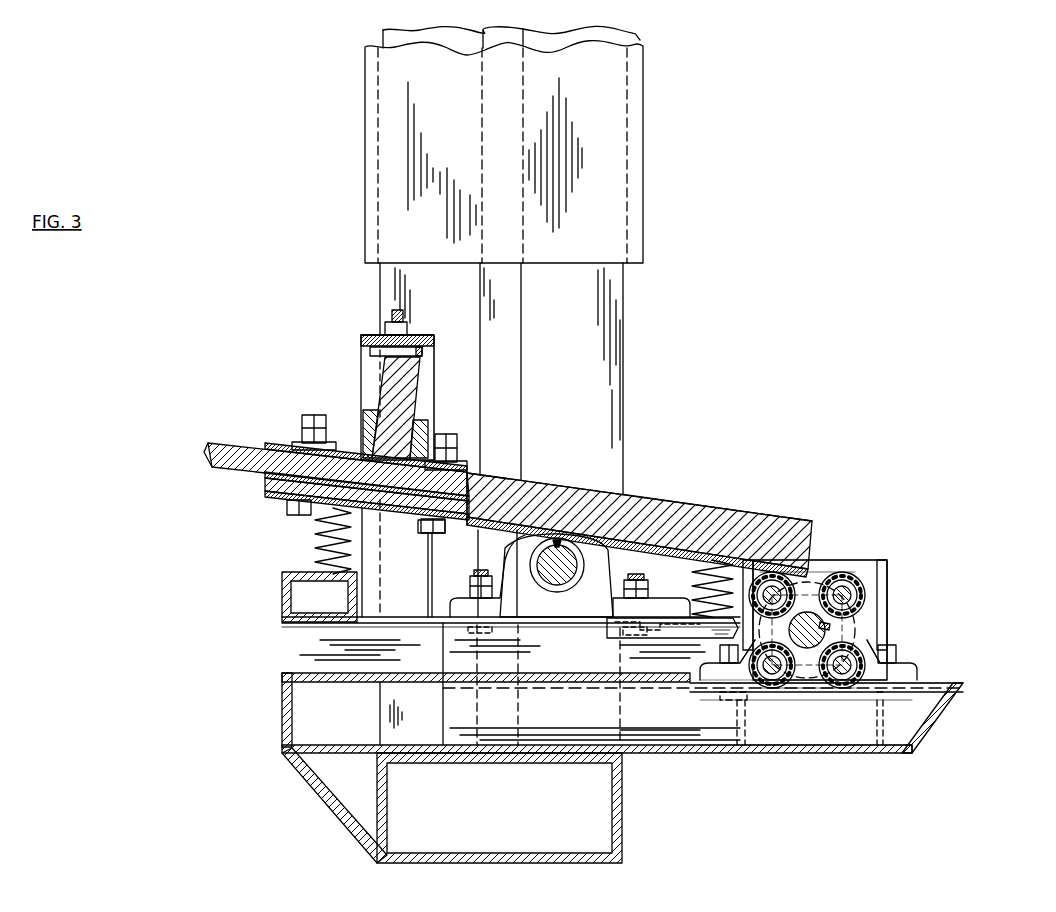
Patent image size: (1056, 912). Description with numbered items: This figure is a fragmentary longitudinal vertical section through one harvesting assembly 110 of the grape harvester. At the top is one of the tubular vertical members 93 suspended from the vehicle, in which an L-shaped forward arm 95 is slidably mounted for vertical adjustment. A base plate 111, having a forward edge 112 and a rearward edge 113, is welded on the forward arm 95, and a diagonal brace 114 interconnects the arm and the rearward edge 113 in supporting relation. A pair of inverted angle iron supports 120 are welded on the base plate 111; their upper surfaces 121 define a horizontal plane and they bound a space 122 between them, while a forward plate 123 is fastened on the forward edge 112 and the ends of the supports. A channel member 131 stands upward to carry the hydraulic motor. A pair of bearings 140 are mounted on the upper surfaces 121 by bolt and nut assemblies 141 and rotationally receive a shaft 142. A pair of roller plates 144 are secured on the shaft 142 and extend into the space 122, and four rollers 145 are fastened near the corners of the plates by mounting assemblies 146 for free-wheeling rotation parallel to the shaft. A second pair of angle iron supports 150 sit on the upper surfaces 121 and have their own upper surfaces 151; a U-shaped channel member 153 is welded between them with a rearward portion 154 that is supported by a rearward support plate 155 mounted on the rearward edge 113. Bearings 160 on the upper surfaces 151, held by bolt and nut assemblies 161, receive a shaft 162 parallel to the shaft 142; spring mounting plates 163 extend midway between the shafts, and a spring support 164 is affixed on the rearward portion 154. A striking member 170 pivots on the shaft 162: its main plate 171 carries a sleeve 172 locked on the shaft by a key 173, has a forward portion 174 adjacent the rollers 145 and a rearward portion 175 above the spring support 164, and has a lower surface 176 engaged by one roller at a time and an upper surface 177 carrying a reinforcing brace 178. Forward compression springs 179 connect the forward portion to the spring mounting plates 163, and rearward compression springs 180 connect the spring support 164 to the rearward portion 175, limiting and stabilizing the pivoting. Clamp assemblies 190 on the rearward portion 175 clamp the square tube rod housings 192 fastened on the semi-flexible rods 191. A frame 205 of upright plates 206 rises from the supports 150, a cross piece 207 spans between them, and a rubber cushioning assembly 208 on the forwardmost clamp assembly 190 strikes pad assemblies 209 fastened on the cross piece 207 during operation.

The vertical member 93 is at (645, 125).
The forward arm 95 is at (612, 324).
The harvesting assembly 110 is at (745, 405).
The base plate 111 is at (688, 755).
The forward edge 112 is at (912, 753).
The rearward edge 113 is at (282, 746).
The diagonal brace 114 is at (310, 787).
The angle iron support 120 is at (950, 684).
The upper surface 121 is at (930, 683).
The space 122 is at (806, 720).
The forward plate 123 is at (948, 714).
The channel member 131 is at (866, 578).
The bearing 140 is at (878, 630).
The bolt and nut assembly 141 is at (715, 655).
The shaft 142 is at (803, 680).
The roller plate 144 is at (800, 588).
The roller 145 is at (858, 574).
The mounting assembly 146 is at (762, 580).
The angle iron support 150 is at (415, 617).
The upper surface 151 is at (398, 618).
The channel member 153 is at (558, 672).
The rearward portion 154 is at (298, 672).
The rearward support plate 155 is at (282, 700).
The bearing 160 is at (614, 500).
The bolt and nut assembly 161 is at (480, 572).
The shaft 162 is at (543, 582).
The spring mounting plate 163 is at (650, 639).
The spring support 164 is at (284, 586).
The striking member 170 is at (712, 494).
The main plate 171 is at (642, 497).
The sleeve 172 is at (592, 572).
The key 173 is at (520, 530).
The forward portion 174 is at (800, 562).
The rearward portion 175 is at (273, 490).
The lower surface 176 is at (390, 513).
The upper surface 177 is at (510, 512).
The brace 178 is at (728, 512).
The forward compression spring 179 is at (698, 578).
The rearward compression spring 180 is at (320, 542).
The clamp assembly 190 is at (292, 437).
The semi-flexible rod 191 is at (212, 457).
The rod housing 192 is at (357, 440).
The frame 205 is at (449, 352).
The upright plate 206 is at (368, 373).
The cross piece 207 is at (415, 335).
The cushioning assembly 208 is at (413, 388).
The pad assembly 209 is at (368, 338).